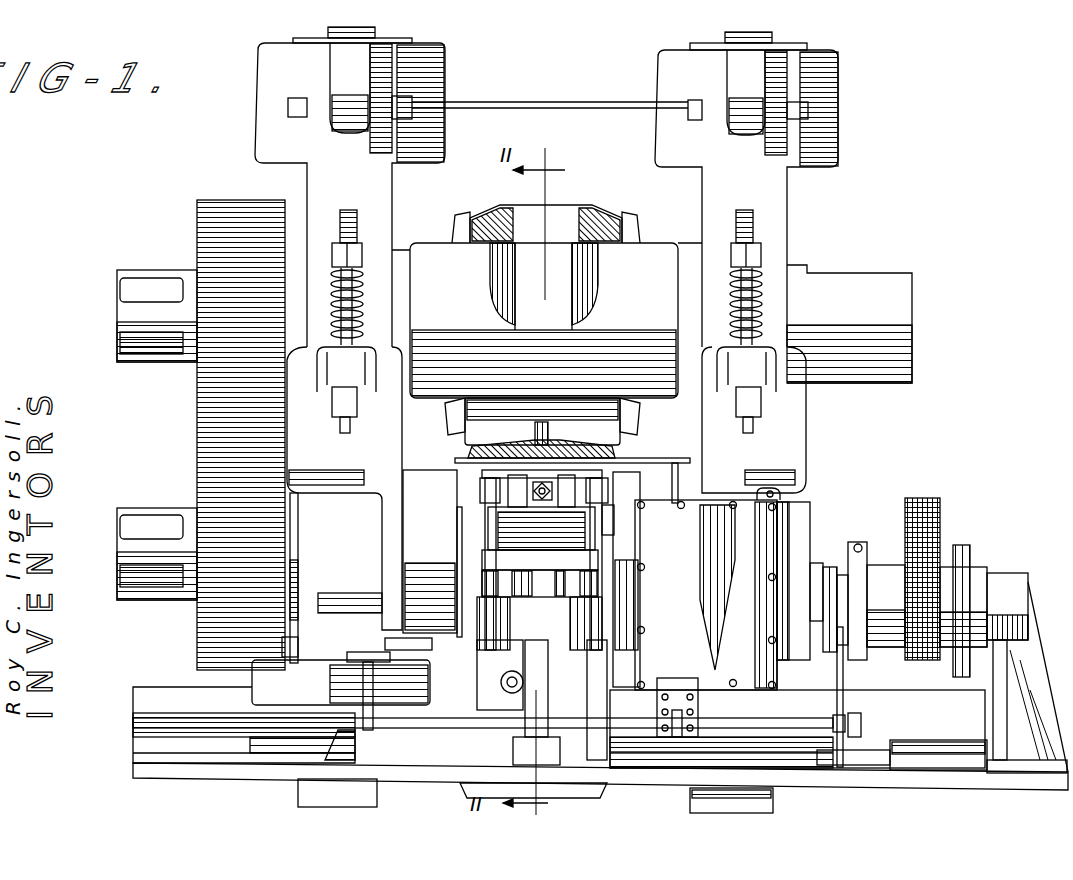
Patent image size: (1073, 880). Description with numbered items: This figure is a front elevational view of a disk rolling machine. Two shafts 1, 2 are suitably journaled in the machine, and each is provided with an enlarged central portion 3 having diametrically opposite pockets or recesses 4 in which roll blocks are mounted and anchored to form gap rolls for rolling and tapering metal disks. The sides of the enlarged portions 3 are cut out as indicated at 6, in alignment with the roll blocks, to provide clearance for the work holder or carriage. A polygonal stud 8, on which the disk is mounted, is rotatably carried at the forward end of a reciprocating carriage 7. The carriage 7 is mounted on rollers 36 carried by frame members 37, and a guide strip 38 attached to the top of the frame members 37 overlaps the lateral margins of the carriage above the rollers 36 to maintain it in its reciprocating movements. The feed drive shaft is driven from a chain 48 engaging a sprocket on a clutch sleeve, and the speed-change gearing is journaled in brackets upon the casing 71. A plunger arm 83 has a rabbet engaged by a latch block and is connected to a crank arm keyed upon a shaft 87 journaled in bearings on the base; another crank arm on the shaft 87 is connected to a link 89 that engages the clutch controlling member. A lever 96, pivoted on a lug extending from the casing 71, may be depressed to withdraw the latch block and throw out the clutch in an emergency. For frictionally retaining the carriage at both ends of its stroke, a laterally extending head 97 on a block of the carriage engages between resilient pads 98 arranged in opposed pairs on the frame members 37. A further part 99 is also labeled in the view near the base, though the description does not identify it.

The shaft 1 is at (146, 290).
The shaft 2 is at (137, 533).
The enlarged central portion 3 is at (655, 264).
The pocket or recess 4 is at (470, 222).
The cut-out 6 is at (556, 296).
The reciprocating carriage 7 is at (540, 478).
The polygonal stud 8 is at (548, 432).
The rollers 36 is at (483, 485).
The frame members 37 is at (470, 527).
The guide strip 38 is at (433, 458).
The chain 48 is at (938, 506).
The casing 71 is at (757, 523).
The plunger arm 83 is at (679, 686).
The shaft 87 is at (763, 722).
The link 89 is at (848, 702).
The lever 96 is at (690, 462).
The laterally extending head 97 is at (606, 521).
The resilient pads 98 is at (600, 513).
The clamp bolt 99 is at (360, 653).